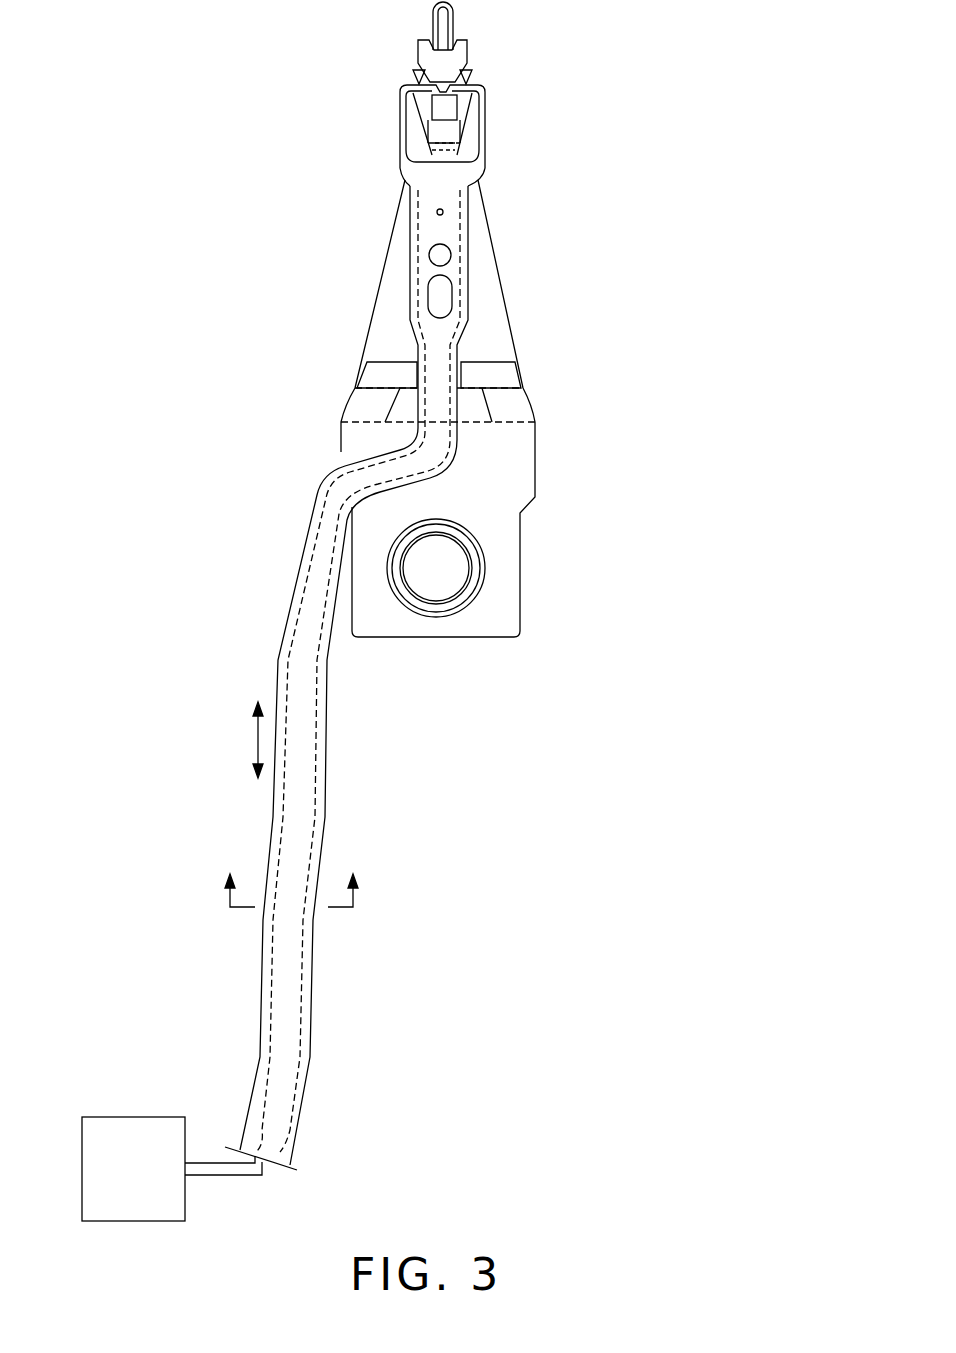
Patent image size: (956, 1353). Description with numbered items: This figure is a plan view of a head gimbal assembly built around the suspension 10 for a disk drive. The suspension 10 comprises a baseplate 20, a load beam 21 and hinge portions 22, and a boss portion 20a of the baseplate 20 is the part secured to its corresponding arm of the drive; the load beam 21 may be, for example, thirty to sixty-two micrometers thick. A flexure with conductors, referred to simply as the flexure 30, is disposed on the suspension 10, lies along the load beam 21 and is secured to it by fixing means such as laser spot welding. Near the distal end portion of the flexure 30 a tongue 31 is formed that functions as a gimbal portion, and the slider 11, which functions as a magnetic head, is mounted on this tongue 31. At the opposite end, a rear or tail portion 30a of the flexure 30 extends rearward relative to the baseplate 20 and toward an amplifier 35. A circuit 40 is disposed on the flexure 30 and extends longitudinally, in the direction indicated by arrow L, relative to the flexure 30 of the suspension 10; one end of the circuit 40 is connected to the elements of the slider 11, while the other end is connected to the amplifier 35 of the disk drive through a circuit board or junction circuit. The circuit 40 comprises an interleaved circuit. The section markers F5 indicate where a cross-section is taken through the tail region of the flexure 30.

The vehicle seat belt device / shoulder anchor assembly 10 is at (298, 228).
The anchor member 11 is at (446, 107).
The holder 31 is at (458, 130).
The adjuster bar 30 is at (463, 242).
The lower end portion of bar 30a is at (273, 830).
The wire / cable 40 is at (310, 760).
The pillar garnish 21 is at (490, 318).
The attachment portion 22 is at (517, 408).
The retractor body 20 is at (517, 484).
The spool opening 20a is at (488, 582).
The drive unit / motor 35 is at (135, 1127).
The stroke length L is at (255, 746).
The section line F5 is at (292, 878).